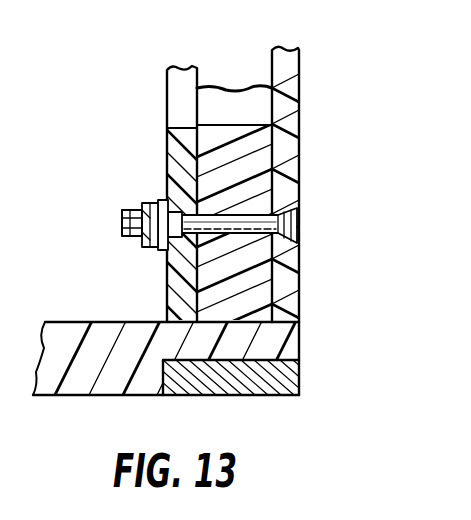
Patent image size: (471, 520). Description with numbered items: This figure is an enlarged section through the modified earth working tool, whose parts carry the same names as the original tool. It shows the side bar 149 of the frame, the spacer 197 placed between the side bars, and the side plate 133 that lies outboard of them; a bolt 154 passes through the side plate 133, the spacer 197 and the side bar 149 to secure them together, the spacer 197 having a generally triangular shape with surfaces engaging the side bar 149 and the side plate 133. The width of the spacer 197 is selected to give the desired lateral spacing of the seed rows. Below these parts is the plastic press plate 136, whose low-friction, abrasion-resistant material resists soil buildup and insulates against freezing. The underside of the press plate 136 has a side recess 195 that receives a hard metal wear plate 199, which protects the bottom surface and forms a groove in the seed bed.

The side plate 133 is at (285, 78).
The press plate 136 is at (122, 368).
The side bar 149 is at (172, 160).
The bolt 154 is at (155, 203).
The side recess or groove 195 is at (263, 358).
The spacer 197 is at (237, 125).
The wear plate 199 is at (253, 378).